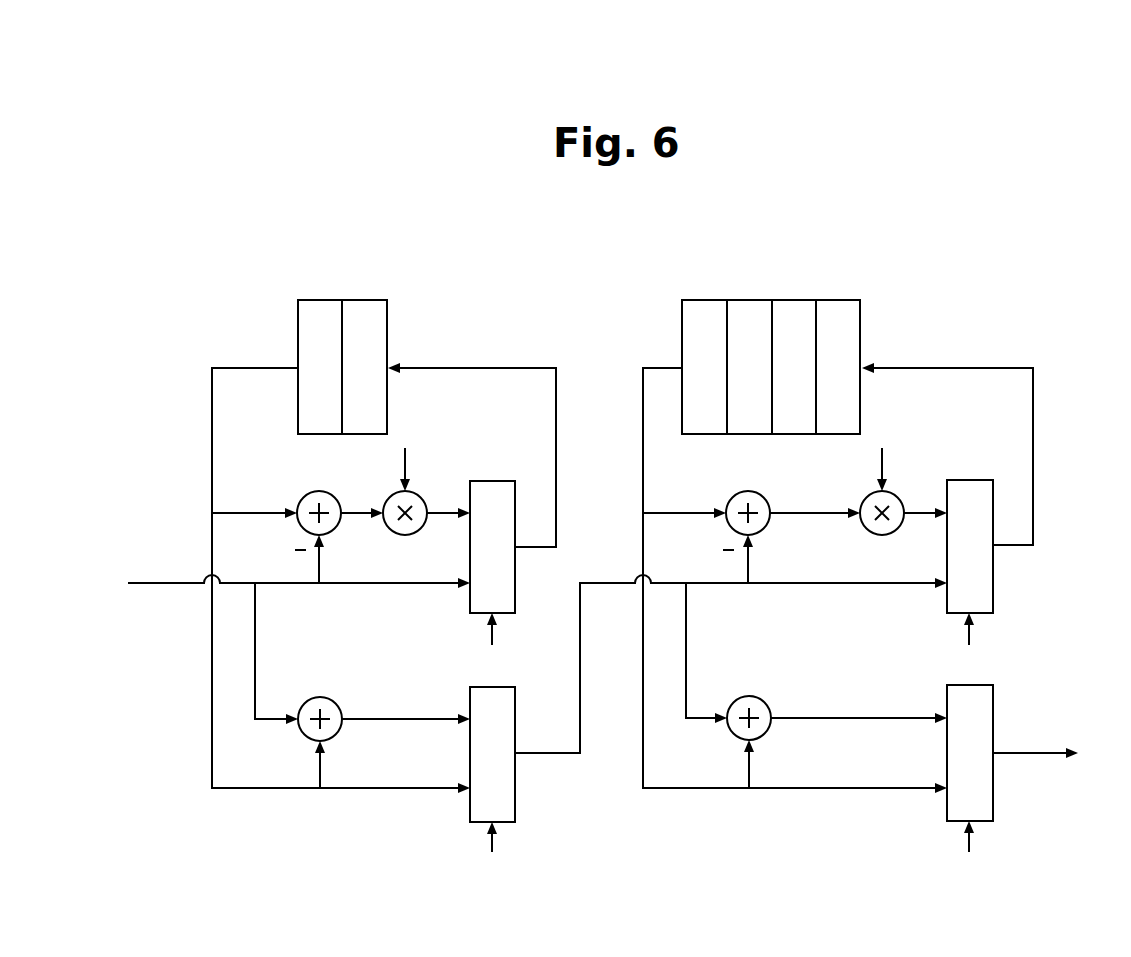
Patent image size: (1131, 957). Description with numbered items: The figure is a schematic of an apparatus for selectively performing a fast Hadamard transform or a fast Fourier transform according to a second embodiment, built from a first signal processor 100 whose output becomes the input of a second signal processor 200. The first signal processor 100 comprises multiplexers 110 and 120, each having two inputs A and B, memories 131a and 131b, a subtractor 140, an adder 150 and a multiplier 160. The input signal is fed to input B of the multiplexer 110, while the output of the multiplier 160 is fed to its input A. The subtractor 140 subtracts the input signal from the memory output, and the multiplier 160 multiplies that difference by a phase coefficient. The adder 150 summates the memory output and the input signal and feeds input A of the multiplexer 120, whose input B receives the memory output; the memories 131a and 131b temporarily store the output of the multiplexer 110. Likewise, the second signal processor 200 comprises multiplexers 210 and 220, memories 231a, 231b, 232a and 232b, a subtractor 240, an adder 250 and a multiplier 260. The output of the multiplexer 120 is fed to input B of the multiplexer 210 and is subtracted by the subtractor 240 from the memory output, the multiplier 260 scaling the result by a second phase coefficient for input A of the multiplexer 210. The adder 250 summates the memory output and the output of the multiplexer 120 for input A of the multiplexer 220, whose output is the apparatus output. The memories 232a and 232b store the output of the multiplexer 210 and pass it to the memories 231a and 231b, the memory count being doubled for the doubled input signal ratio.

The first signal processor 100 is at (537, 284).
The multiplexer 110 is at (492, 481).
The multiplexer 120 is at (515, 788).
The memory 131a is at (318, 300).
The memory 131b is at (377, 286).
The subtractor 140 is at (322, 491).
The adder 150 is at (322, 697).
The multiplier 160 is at (415, 492).
The second signal processor 200 is at (1014, 284).
The multiplexer 210 is at (969, 480).
The multiplexer 220 is at (993, 787).
The memory 231a is at (697, 300).
The memory 231b is at (750, 286).
The memory 232a is at (803, 300).
The memory 232b is at (862, 321).
The subtractor 240 is at (751, 491).
The adder 250 is at (751, 696).
The multiplier 260 is at (892, 492).